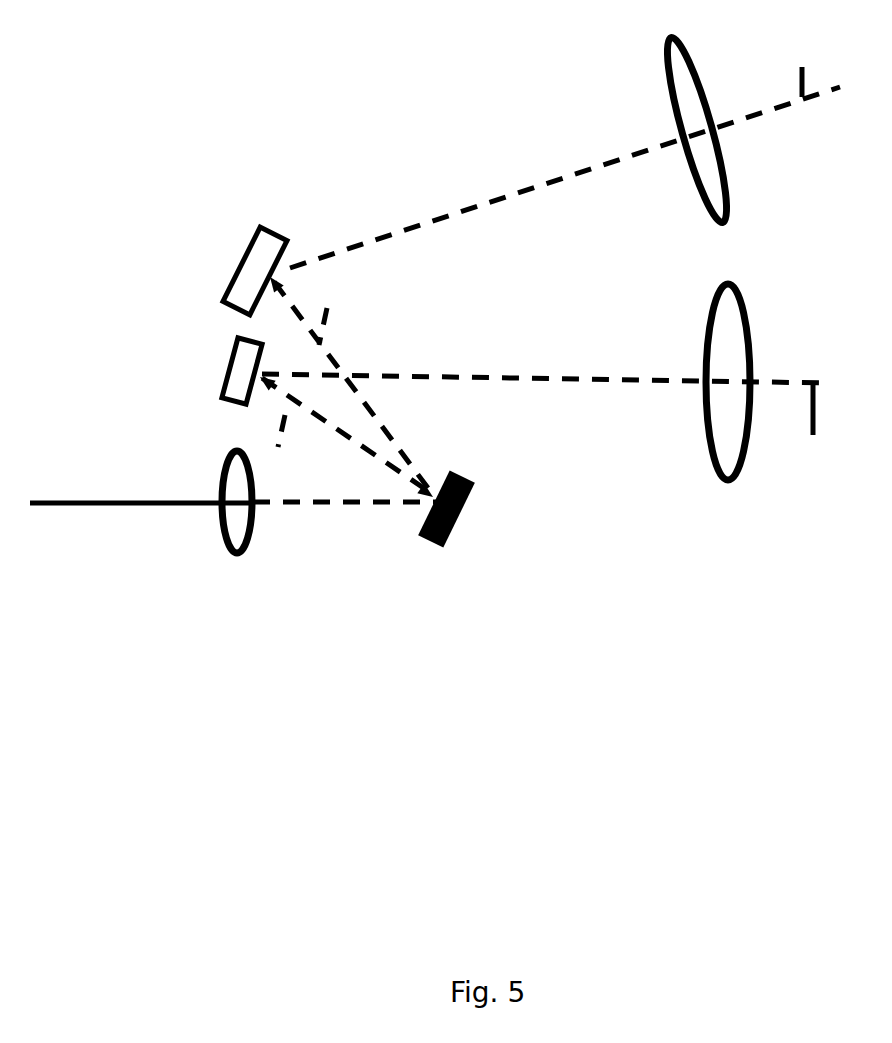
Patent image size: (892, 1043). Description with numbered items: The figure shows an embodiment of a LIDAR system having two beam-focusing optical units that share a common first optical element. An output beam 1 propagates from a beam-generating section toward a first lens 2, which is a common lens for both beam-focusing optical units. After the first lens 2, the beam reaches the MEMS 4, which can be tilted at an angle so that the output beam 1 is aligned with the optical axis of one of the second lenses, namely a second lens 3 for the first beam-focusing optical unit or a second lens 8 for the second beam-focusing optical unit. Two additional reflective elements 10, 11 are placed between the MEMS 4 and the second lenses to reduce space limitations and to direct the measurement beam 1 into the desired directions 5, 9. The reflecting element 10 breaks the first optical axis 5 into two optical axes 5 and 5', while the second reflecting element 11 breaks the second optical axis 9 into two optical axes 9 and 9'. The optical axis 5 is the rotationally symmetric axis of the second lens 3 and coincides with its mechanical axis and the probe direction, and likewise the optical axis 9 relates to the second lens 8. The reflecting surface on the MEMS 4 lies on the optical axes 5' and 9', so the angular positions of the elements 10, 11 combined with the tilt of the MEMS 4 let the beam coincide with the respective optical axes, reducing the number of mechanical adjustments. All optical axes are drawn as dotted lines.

The output beam 1 is at (108, 503).
The first lens 2 is at (237, 548).
The second lens 3 is at (660, 65).
The MEMS 4 is at (470, 495).
The optical axis 5 is at (803, 58).
The optical axis 5' is at (327, 303).
The second lens 8 is at (708, 435).
The second optical axis 9 is at (812, 434).
The optical axis 9' is at (280, 450).
The reflecting element 10 is at (247, 250).
The second reflecting element 11 is at (232, 368).